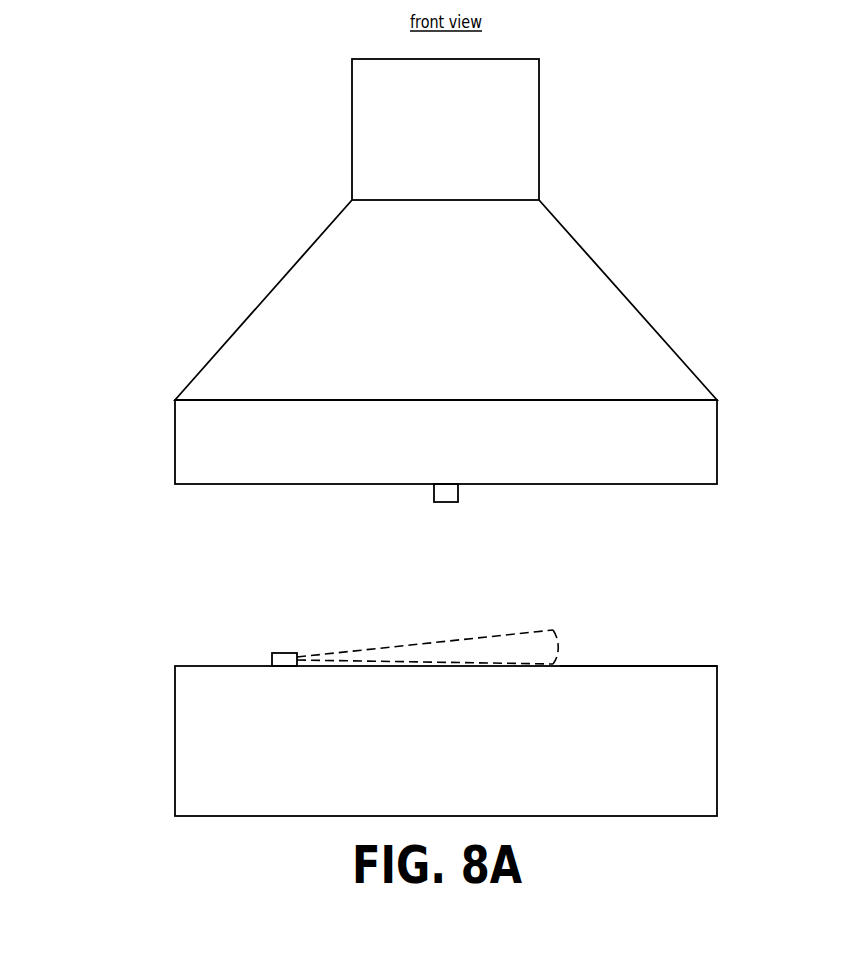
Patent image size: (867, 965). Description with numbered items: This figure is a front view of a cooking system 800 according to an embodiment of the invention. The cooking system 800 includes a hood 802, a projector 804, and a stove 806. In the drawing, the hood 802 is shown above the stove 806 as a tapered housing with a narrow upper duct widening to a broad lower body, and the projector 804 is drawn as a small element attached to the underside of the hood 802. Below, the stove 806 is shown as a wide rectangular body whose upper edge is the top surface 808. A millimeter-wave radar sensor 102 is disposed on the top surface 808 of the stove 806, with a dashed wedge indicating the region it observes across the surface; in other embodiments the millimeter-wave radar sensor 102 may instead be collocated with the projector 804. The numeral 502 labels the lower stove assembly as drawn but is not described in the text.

The cooking system 800 is at (98, 87).
The hood 802 is at (291, 271).
The projector 804 is at (460, 488).
The cooktop assembly 502 is at (490, 692).
The stove 806 is at (461, 750).
The top surface 808 is at (670, 666).
The millimeter-wave radar sensor 102 is at (272, 656).